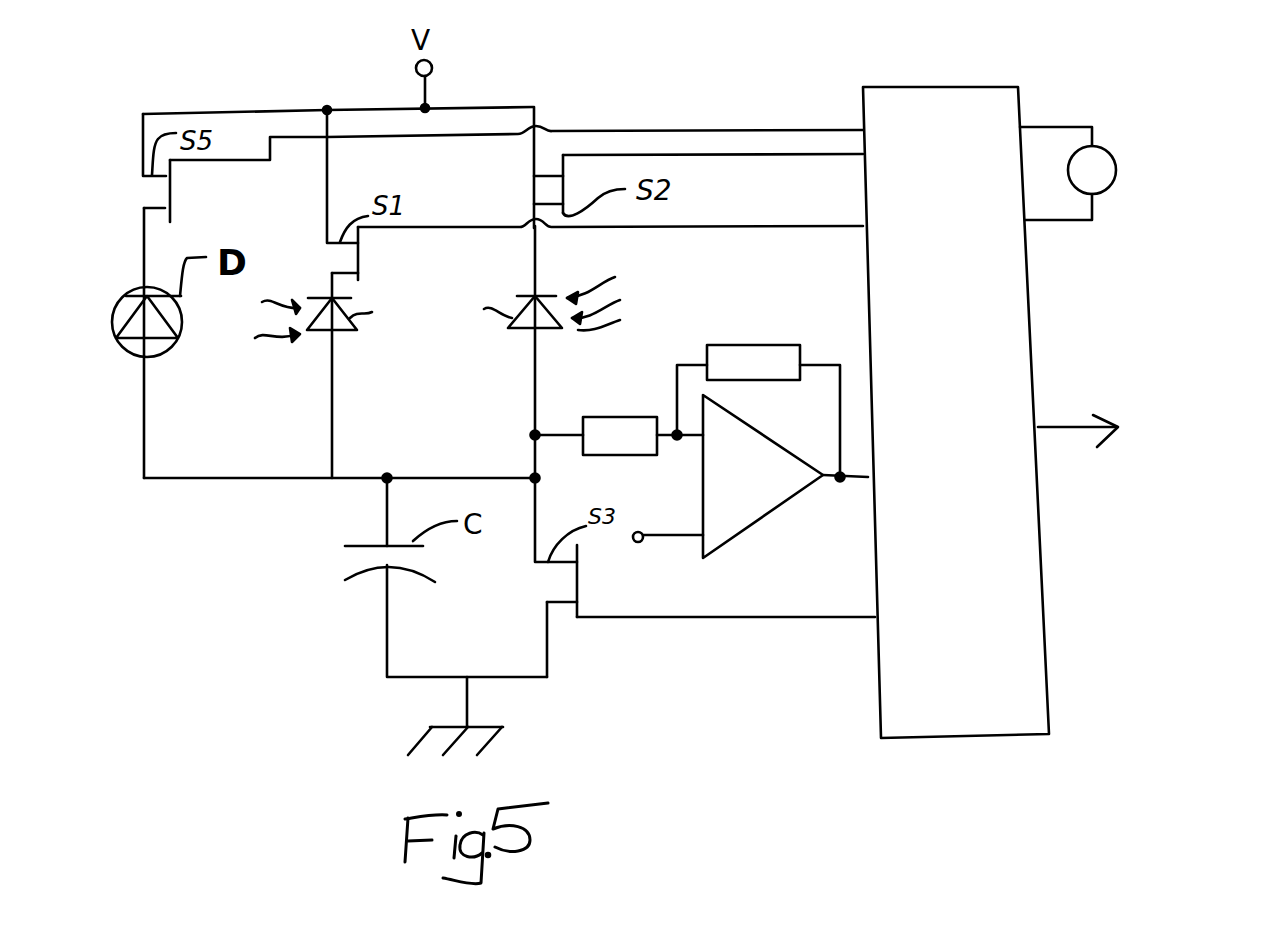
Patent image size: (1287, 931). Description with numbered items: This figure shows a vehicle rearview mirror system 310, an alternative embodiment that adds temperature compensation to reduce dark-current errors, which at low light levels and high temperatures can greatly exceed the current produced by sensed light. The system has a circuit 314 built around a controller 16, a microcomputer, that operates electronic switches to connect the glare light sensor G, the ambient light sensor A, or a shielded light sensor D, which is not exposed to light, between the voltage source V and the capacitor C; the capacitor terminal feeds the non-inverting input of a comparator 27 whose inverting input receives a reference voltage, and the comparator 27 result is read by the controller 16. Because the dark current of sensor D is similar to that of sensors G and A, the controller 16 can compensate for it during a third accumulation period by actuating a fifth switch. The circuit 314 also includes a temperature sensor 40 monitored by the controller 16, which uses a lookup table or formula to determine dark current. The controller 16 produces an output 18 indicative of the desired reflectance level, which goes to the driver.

The controller 16 is at (988, 88).
The output 18 is at (1056, 426).
The comparator 27 is at (668, 531).
The temperature sensor 40 is at (1107, 155).
The vehicle rearview mirror system 310 is at (1145, 184).
The circuit 314 is at (750, 303).